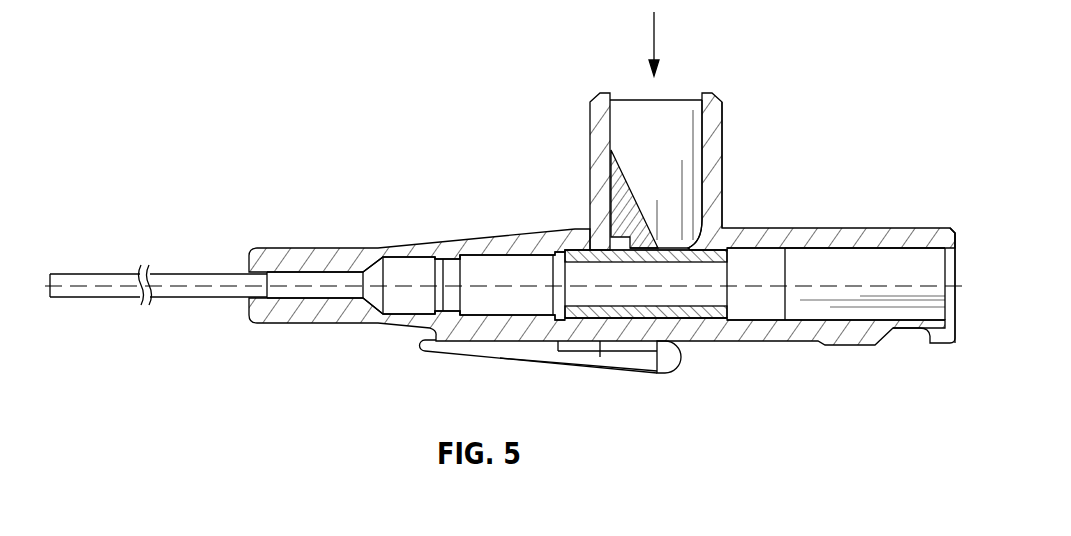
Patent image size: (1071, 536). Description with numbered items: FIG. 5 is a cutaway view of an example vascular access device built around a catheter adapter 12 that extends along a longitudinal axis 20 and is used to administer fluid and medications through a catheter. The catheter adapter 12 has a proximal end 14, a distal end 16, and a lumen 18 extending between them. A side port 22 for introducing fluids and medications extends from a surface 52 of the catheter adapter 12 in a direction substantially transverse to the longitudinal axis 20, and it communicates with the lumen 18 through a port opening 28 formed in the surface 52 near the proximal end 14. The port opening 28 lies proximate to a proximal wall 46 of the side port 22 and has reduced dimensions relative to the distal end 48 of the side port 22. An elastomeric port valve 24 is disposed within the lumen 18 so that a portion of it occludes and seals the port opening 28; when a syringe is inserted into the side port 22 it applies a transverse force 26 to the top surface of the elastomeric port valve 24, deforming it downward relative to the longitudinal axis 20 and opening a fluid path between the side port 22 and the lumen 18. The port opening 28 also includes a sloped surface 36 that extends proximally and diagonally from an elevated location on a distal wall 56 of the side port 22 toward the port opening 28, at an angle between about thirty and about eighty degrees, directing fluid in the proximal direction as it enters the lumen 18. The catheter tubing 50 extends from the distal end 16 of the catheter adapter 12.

The catheter adapter 12 is at (846, 140).
The proximal end 14 is at (953, 228).
The distal end 16 is at (257, 258).
The lumen 18 is at (877, 275).
The longitudinal axis 20 is at (817, 283).
The side port 22 is at (713, 128).
The elastomeric port valve 24 is at (553, 231).
The transverse force 26 is at (658, 37).
The port opening 28 is at (705, 233).
The sloped surface 36 is at (612, 182).
The proximal wall 46 is at (723, 163).
The distal end of the side port 48 is at (590, 250).
The tubing 50 is at (96, 276).
The surface 52 is at (792, 242).
The distal wall 56 is at (600, 107).